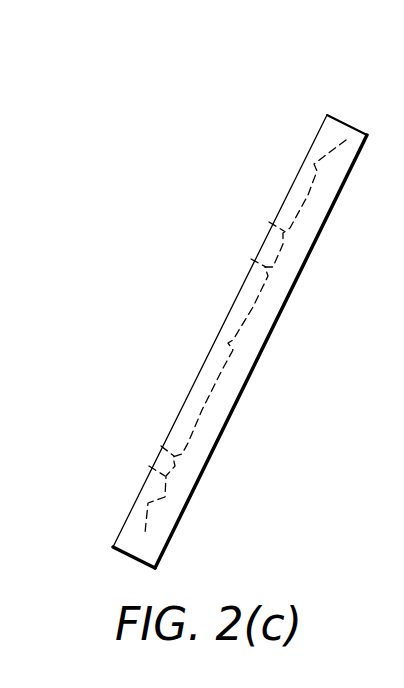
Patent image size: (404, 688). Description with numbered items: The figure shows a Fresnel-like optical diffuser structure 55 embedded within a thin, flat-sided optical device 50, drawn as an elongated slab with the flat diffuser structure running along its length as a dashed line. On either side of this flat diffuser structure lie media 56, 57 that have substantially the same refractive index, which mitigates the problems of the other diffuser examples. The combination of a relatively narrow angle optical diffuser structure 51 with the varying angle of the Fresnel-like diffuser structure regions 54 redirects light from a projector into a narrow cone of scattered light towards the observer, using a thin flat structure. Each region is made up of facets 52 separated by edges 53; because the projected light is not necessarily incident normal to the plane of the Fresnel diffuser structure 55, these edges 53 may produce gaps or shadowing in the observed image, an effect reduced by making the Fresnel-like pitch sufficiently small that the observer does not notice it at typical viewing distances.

The thin, flat-sided optical device 50 is at (283, 96).
The narrow angle optical diffuser structure 51 is at (222, 342).
The facets 52 is at (250, 260).
The edges 53 is at (272, 225).
The Fresnel-like diffuser structure regions 54 is at (238, 180).
The Fresnel-like optical diffuser structure 55 is at (174, 170).
The medium 56 is at (163, 522).
The medium 57 is at (128, 518).